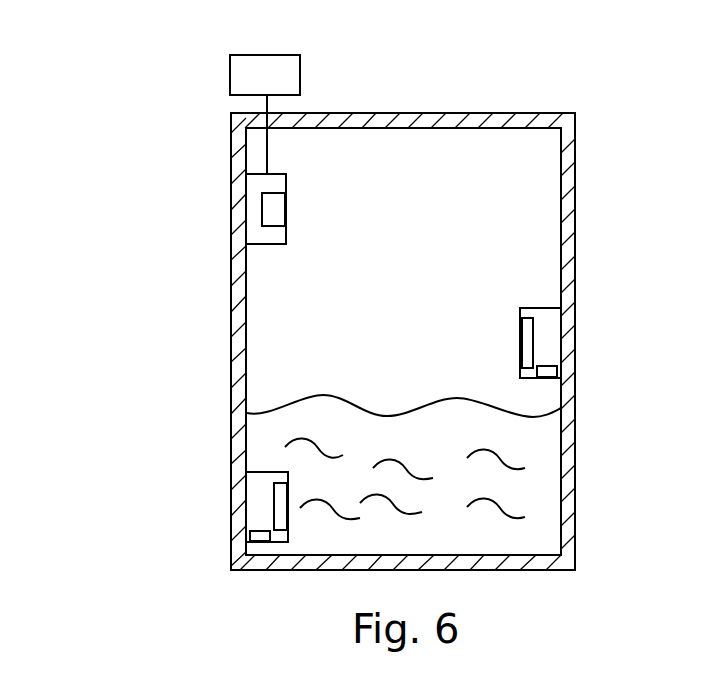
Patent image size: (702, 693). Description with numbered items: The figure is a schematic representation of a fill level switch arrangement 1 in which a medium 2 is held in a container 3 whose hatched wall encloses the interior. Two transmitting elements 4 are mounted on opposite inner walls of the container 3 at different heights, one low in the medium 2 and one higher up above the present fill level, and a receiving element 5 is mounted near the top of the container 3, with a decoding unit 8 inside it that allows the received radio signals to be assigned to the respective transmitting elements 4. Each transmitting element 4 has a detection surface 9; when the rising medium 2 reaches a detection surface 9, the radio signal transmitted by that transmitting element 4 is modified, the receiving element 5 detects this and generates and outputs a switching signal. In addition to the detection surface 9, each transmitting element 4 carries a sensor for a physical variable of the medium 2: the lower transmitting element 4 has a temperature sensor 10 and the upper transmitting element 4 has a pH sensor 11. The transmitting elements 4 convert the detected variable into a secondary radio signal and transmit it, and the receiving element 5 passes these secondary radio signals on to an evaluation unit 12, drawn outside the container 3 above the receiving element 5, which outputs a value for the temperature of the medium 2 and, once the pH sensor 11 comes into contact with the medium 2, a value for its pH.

The fill level switch arrangement 1 is at (104, 180).
The medium 2 is at (547, 523).
The container 3 is at (568, 197).
The transmitting element 4 is at (550, 348).
The receiving element 5 is at (253, 203).
The decoding unit 8 is at (281, 202).
The detection surface 9 is at (525, 340).
The temperature sensor 10 is at (260, 535).
The pH sensor 11 is at (553, 375).
The evaluation unit 12 is at (283, 70).